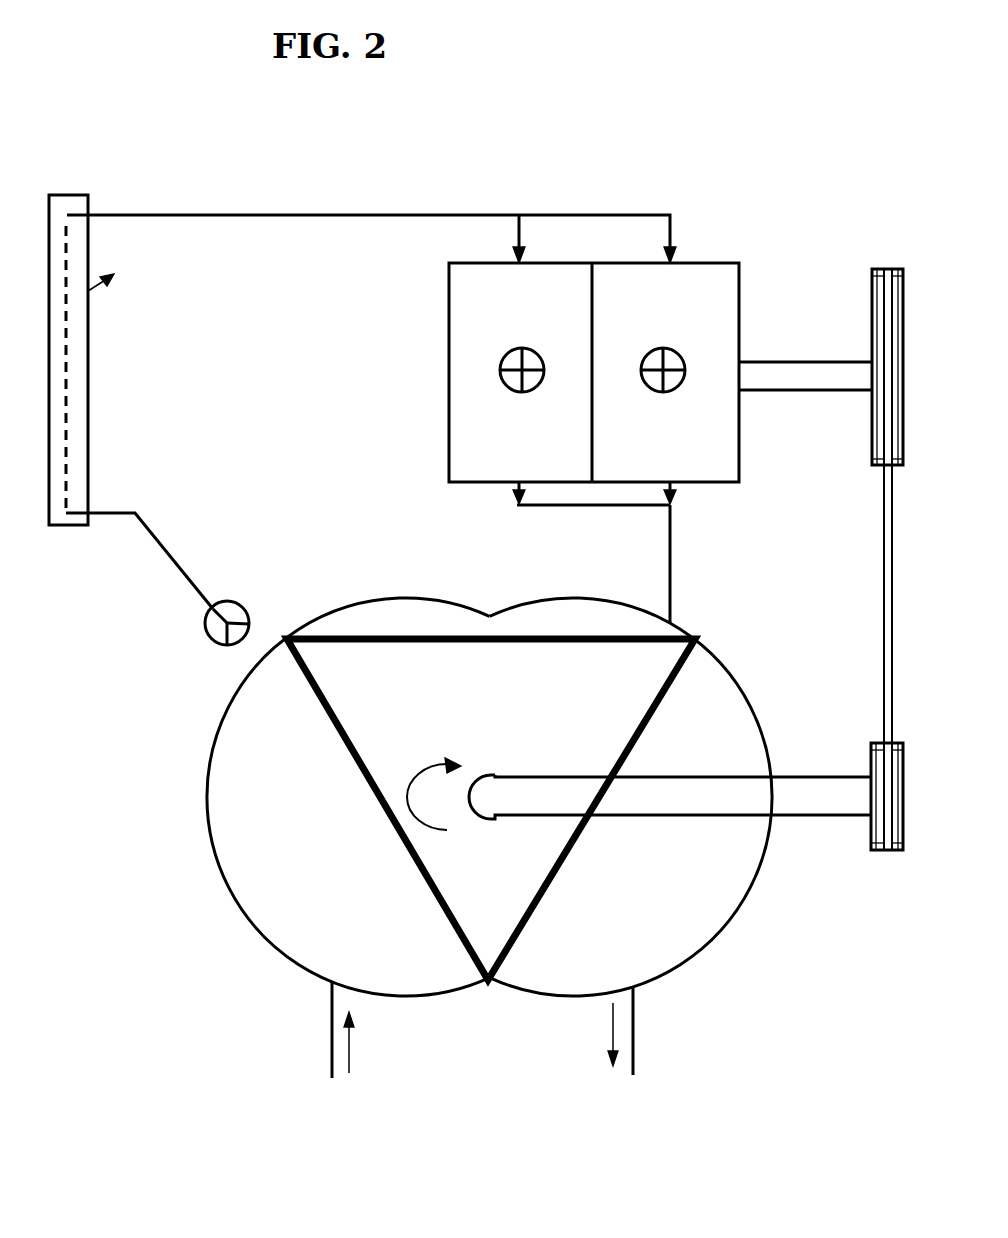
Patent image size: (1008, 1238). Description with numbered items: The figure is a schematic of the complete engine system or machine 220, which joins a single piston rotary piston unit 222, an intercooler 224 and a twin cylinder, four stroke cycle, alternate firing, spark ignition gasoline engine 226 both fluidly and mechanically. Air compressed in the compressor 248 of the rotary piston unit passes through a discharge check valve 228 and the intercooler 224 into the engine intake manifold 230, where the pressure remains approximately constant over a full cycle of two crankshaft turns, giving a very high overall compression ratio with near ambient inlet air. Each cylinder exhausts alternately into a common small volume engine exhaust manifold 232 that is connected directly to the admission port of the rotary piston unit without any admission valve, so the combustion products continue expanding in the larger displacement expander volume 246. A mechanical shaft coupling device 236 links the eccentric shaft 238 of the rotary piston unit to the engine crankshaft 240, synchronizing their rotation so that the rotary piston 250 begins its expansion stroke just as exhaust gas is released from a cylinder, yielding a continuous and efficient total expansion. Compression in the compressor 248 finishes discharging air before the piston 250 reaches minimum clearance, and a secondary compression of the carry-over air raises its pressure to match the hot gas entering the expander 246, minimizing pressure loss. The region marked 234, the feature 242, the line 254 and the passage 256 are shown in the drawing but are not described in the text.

The machine 220 is at (752, 214).
The rotary piston unit 222 is at (742, 901).
The intercooler 224 is at (88, 447).
The internal combustion engine 226 is at (742, 283).
The discharge check valve 228 is at (207, 617).
The engine intake manifold 230 is at (580, 214).
The engine exhaust manifold 232 is at (528, 514).
The pump chamber 234 is at (358, 621).
The mechanical shaft coupling device 236 is at (884, 529).
The eccentric shaft 238 is at (832, 776).
The crankshaft 240 is at (779, 361).
The adjustment dial 242 is at (500, 362).
The expander volume 246 is at (722, 702).
The compressor 248 is at (255, 708).
The rotary piston 250 is at (405, 735).
The control line 254 is at (680, 613).
The passage 256 is at (255, 667).